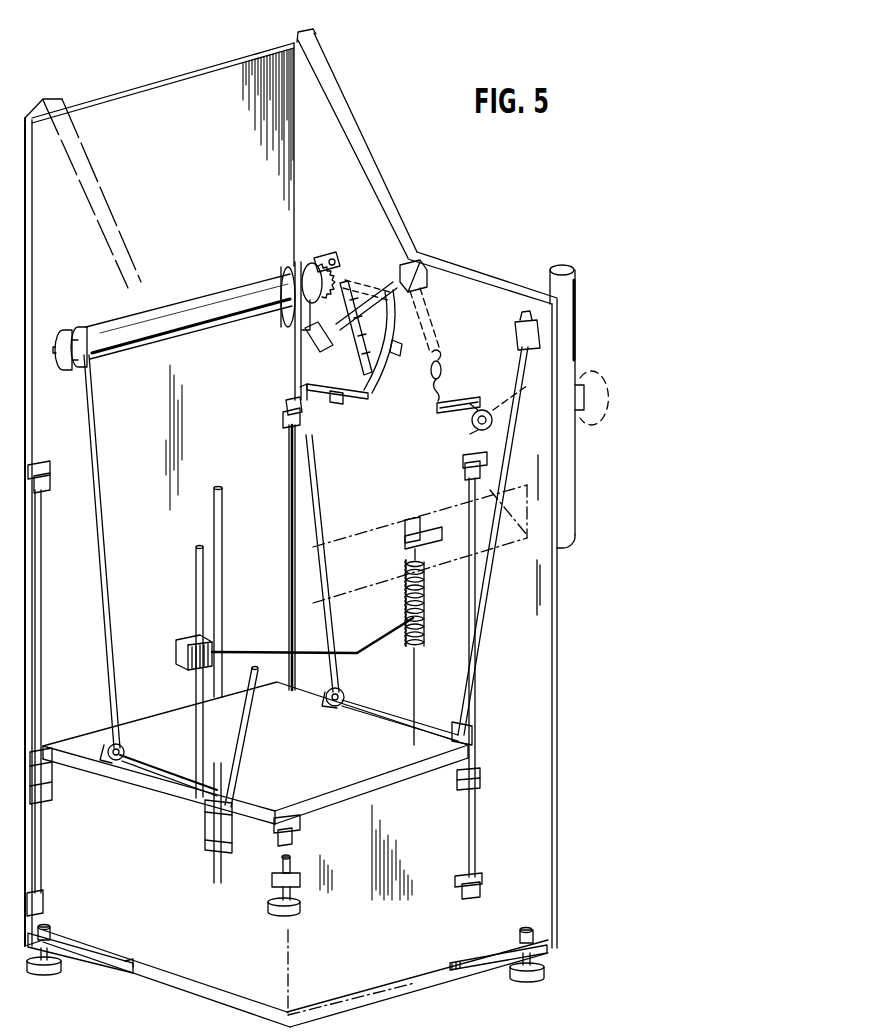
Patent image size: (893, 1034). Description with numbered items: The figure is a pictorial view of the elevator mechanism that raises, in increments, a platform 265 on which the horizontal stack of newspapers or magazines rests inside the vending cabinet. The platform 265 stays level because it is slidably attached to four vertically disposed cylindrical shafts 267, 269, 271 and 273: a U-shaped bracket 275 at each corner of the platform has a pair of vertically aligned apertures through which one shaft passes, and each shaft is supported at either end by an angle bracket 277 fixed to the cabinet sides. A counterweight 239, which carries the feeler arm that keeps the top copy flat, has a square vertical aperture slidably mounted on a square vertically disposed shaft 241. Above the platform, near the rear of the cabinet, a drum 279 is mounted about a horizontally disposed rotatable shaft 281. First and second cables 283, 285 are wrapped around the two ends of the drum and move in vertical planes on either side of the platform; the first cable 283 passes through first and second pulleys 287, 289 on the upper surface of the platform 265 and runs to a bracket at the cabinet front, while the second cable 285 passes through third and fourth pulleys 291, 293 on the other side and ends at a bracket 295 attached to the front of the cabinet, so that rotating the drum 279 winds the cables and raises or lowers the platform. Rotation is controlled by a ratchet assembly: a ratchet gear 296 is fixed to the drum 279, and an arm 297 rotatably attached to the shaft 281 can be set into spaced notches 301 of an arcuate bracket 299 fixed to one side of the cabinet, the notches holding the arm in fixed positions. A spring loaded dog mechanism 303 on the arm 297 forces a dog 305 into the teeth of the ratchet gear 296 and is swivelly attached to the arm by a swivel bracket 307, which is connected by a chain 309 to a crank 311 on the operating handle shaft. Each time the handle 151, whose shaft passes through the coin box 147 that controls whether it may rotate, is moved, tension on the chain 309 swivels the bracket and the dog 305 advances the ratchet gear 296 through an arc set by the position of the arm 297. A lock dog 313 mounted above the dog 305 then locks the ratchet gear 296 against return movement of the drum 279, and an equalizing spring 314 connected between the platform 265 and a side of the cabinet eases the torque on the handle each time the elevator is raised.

The coin box 147 is at (568, 464).
The handle 151 is at (575, 268).
The counterweight 239 is at (175, 651).
The vertically disposed shaft 241 is at (197, 589).
The platform 265 is at (393, 783).
The cylindrical shaft 267 is at (476, 834).
The cylindrical shaft 269 is at (288, 535).
The cylindrical shaft 271 is at (42, 863).
The cylindrical shaft 273 is at (223, 867).
The U-shaped bracket 275 is at (52, 793).
The angle bracket 277 is at (285, 421).
The drum 279 is at (173, 314).
The rotatable shaft 281 is at (62, 362).
The first cable 283 is at (97, 456).
The second cable 285 is at (293, 330).
The first pulley 287 is at (125, 750).
The second pulley 289 is at (235, 764).
The third pulley 291 is at (346, 690).
The fourth pulley 293 is at (452, 722).
The bracket 295 is at (519, 328).
The ratchet gear 296 is at (290, 262).
The arm 297 is at (371, 384).
The arcuate bracket 299 is at (424, 333).
The notches 301 is at (412, 311).
The spring loaded dog mechanism 303 is at (308, 340).
The dog 305 is at (332, 286).
The swivel bracket 307 is at (325, 348).
The chain 309 is at (443, 369).
The crank 311 is at (456, 409).
The lock dog 313 is at (317, 262).
The equalizing spring 314 is at (421, 592).